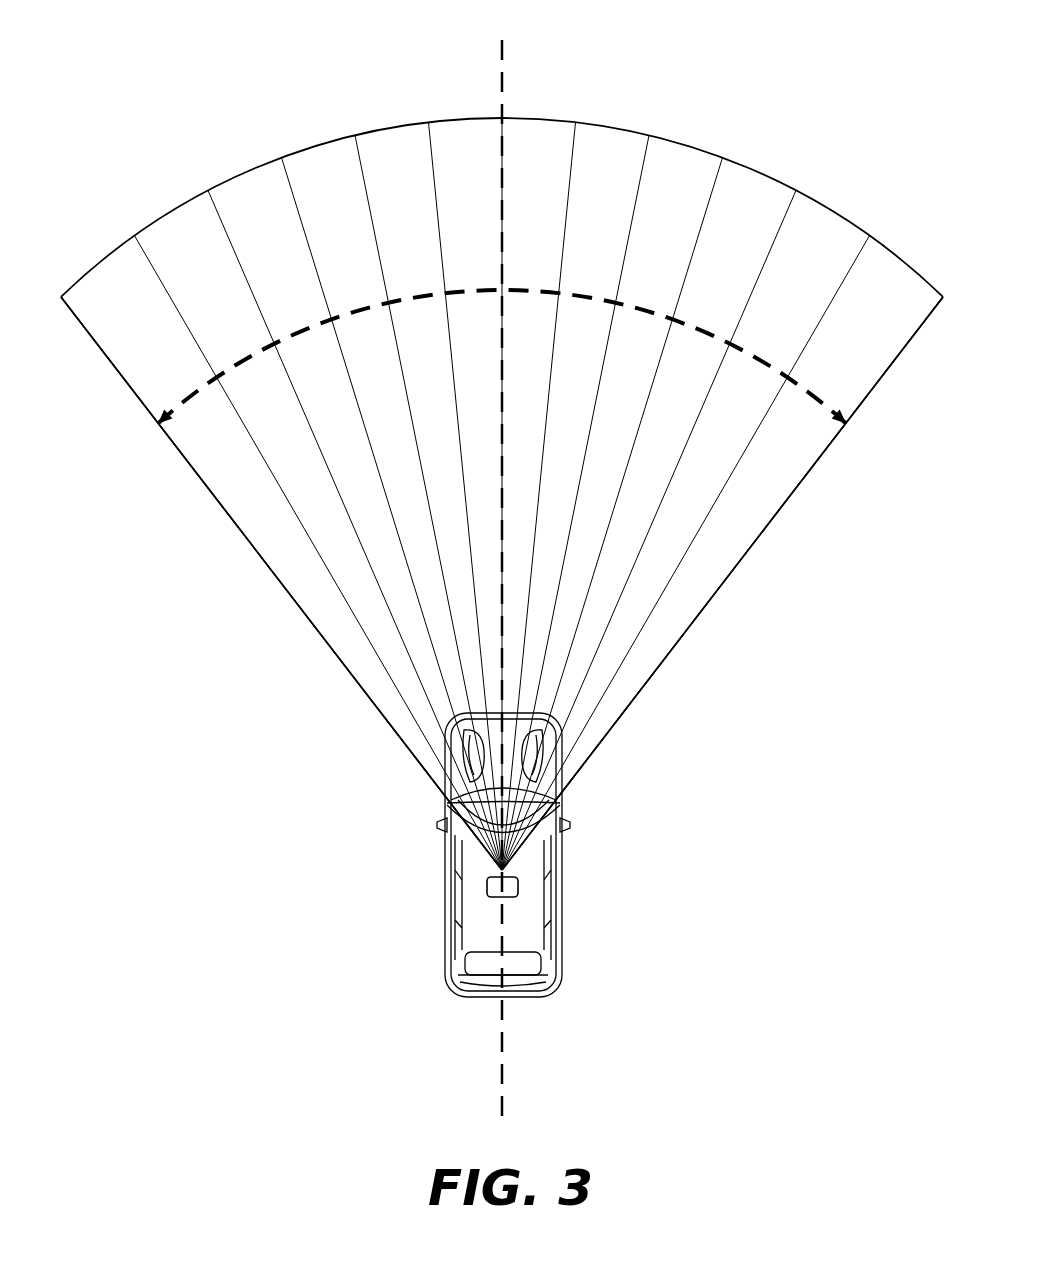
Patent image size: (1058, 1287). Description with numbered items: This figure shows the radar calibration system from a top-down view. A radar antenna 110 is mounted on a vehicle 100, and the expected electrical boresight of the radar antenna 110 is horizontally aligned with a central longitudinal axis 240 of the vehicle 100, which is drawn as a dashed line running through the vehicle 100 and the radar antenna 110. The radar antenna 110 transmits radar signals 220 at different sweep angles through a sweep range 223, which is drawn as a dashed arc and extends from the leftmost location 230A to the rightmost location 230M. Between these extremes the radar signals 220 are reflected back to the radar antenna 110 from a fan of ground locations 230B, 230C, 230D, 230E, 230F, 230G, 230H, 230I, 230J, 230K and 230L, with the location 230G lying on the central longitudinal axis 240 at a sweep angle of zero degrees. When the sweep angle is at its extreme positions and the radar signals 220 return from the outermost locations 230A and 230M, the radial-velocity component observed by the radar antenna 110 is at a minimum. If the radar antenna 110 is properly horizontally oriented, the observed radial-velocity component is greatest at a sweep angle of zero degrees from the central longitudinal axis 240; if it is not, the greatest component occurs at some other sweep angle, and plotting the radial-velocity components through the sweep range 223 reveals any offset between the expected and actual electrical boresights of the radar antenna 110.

The vehicle 100 is at (557, 935).
The radar antenna 110 is at (518, 885).
The radar signals 220 is at (217, 513).
The sweep range 223 is at (695, 330).
The location 230A is at (61, 296).
The location 230B is at (134, 235).
The location 230C is at (206, 190).
The location 230D is at (281, 157).
The location 230E is at (355, 135).
The location 230F is at (428, 122).
The location 230G is at (500, 116).
The location 230H is at (575, 122).
The location 230I is at (650, 134).
The location 230J is at (724, 156).
The location 230K is at (797, 188).
The location 230L is at (871, 236).
The location 230M is at (943, 296).
The central longitudinal axis 240 is at (510, 62).